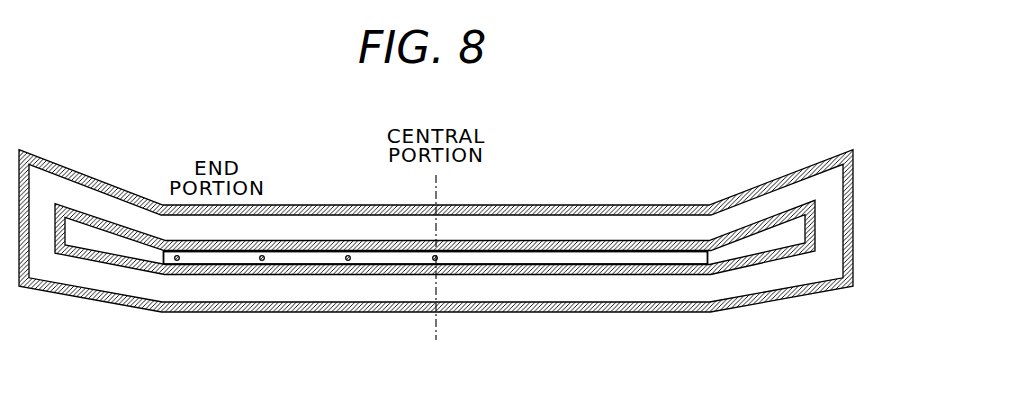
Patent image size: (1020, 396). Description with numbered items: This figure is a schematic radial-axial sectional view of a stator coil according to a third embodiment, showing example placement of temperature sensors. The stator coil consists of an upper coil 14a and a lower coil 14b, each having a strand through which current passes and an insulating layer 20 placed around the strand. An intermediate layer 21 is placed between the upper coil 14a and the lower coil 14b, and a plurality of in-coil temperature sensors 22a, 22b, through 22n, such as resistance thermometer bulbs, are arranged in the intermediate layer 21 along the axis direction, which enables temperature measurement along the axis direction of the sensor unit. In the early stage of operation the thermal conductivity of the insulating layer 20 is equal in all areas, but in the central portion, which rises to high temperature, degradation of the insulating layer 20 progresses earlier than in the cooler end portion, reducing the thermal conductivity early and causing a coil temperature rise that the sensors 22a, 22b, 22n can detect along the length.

The insulating layer 20 is at (561, 207).
The upper coil 14a is at (640, 290).
The lower coil 14b is at (642, 222).
The intermediate layer 21 is at (525, 258).
The in-coil temperature sensor 22a is at (177, 258).
The in-coil temperature sensor 22b is at (262, 258).
The in-coil temperature sensor 22n is at (435, 258).